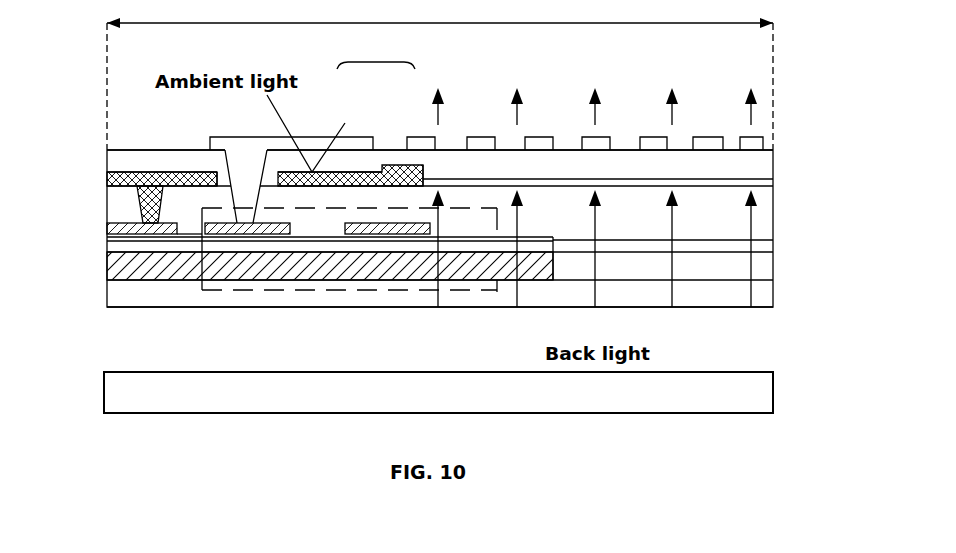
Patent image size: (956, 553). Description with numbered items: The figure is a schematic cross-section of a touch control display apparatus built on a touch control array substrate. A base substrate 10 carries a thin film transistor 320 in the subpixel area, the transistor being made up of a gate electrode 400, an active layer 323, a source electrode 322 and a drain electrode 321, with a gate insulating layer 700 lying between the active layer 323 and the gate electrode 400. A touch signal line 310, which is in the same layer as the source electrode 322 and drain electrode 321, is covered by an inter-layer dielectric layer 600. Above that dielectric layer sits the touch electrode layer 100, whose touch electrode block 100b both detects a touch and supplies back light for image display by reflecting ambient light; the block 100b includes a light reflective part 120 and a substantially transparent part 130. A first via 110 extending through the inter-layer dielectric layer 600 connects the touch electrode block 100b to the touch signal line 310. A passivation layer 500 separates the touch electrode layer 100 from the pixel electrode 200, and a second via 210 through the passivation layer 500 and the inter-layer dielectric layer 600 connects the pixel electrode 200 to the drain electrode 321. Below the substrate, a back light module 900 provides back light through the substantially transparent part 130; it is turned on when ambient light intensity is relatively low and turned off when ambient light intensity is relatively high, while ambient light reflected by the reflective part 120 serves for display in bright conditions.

The base substrate 10 is at (757, 300).
The touch electrode layer 100 is at (760, 182).
The touch electrode block 100b is at (376, 54).
The first via 110 is at (140, 204).
The reflective part 120 is at (303, 182).
The substantially transparent part 130 is at (457, 182).
The pixel electrode 200 is at (760, 145).
The second via 210 is at (238, 170).
The touch signal line 310 is at (120, 230).
The thin film transistor 320 is at (344, 287).
The drain electrode 321 is at (258, 225).
The source electrode 322 is at (390, 228).
The active layer 323 is at (308, 240).
The gate electrode 400 is at (330, 266).
The passivation layer 500 is at (760, 163).
The inter-layer dielectric layer 600 is at (760, 229).
The gate insulating layer 700 is at (757, 249).
The back light module 900 is at (760, 391).